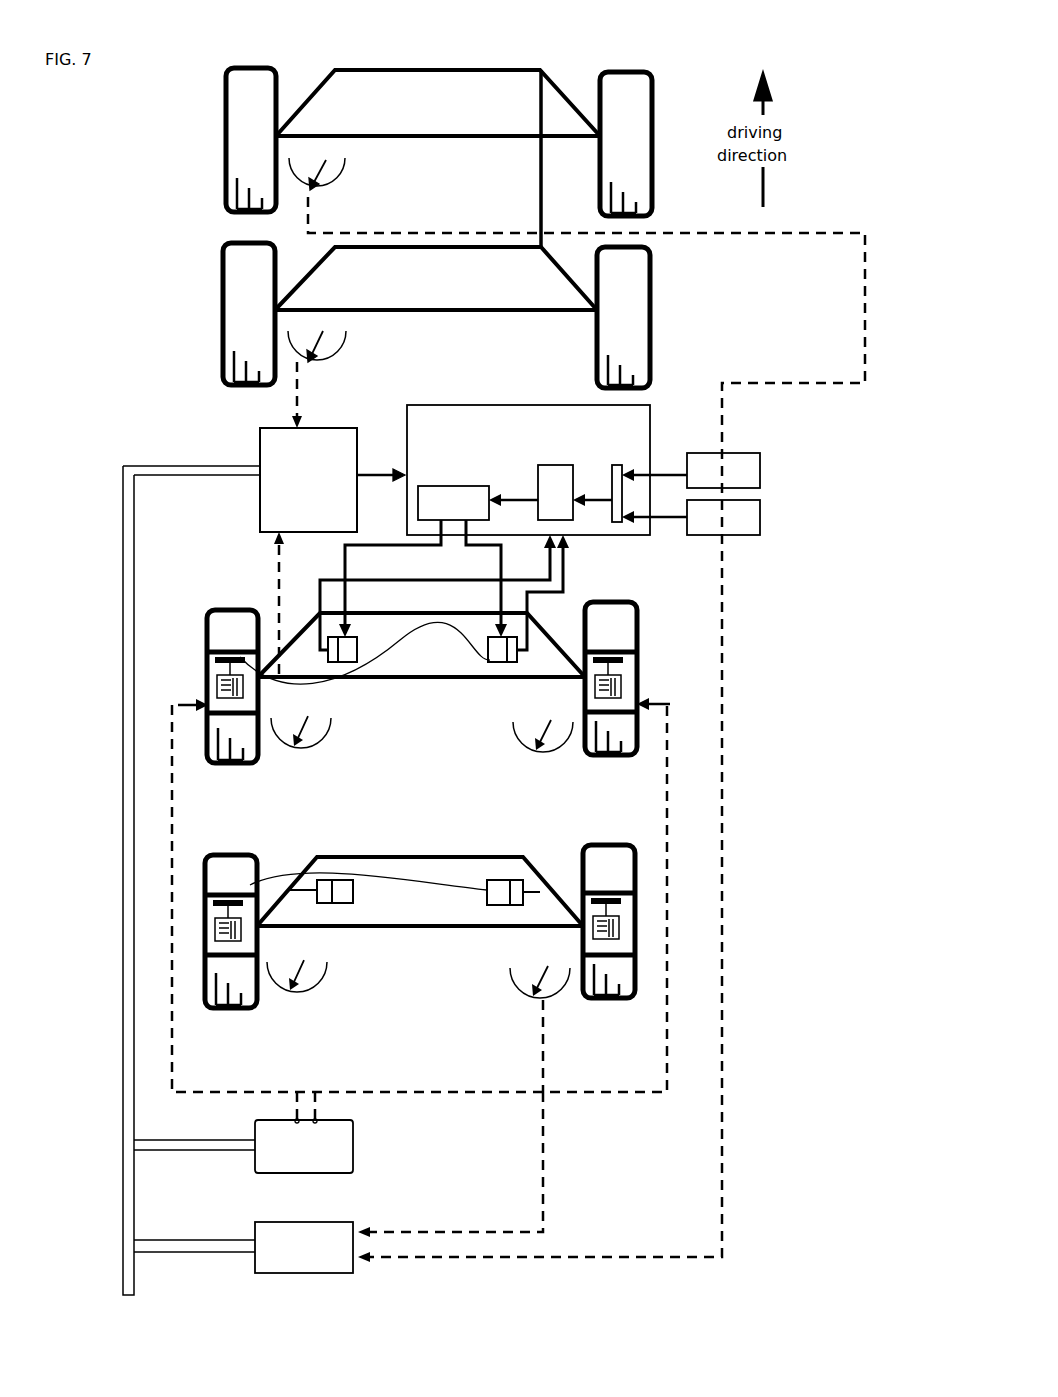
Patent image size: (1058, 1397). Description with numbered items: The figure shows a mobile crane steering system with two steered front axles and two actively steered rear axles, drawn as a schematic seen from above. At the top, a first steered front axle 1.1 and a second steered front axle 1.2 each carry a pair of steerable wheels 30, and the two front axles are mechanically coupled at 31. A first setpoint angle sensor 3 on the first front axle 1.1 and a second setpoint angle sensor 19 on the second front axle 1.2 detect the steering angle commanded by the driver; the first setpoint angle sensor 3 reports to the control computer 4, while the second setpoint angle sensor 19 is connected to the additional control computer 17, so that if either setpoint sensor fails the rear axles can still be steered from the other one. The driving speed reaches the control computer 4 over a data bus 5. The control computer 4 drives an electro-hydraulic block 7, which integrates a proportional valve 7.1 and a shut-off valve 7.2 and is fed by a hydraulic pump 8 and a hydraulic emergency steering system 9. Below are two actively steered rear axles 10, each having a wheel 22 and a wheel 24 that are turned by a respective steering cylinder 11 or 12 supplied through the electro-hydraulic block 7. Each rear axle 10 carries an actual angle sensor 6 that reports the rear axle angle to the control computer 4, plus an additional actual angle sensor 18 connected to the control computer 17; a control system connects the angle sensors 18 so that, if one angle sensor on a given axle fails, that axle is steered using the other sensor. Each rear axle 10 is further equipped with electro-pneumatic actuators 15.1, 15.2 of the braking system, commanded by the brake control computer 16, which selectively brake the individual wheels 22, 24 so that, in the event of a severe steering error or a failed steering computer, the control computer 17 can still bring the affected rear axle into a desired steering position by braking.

The steerable wheels 30 is at (270, 80).
The mechanical coupling 31 is at (535, 95).
The second steered front axle 1.2 is at (272, 136).
The first steered front axle 1.1 is at (272, 309).
The second setpoint angle sensor 19 is at (292, 172).
The setpoint angle sensor 3 is at (290, 360).
The control computer 4 is at (260, 436).
The data bus 5 is at (260, 475).
The electro-hydraulic block 7 is at (640, 437).
The proportional valve 7.1 is at (470, 500).
The shut-off valve 7.2 is at (555, 500).
The hydraulic pump 8 is at (755, 470).
The hydraulic emergency steering system 9 is at (755, 518).
The wheel 22 is at (255, 615).
The steering cylinder 11 is at (228, 622).
The steering cylinder 12 is at (240, 658).
The actively steered rear axle 10 is at (240, 678).
The actual angle sensor 6 is at (252, 736).
The wheel 24 is at (637, 606).
The electro-pneumatic actuator 15.1 is at (623, 668).
The electro-pneumatic actuator 15.2 is at (243, 677).
The additional actual angle sensor 18 is at (640, 736).
The control computer for the brake 16 is at (252, 1130).
The control computer 17 is at (252, 1232).